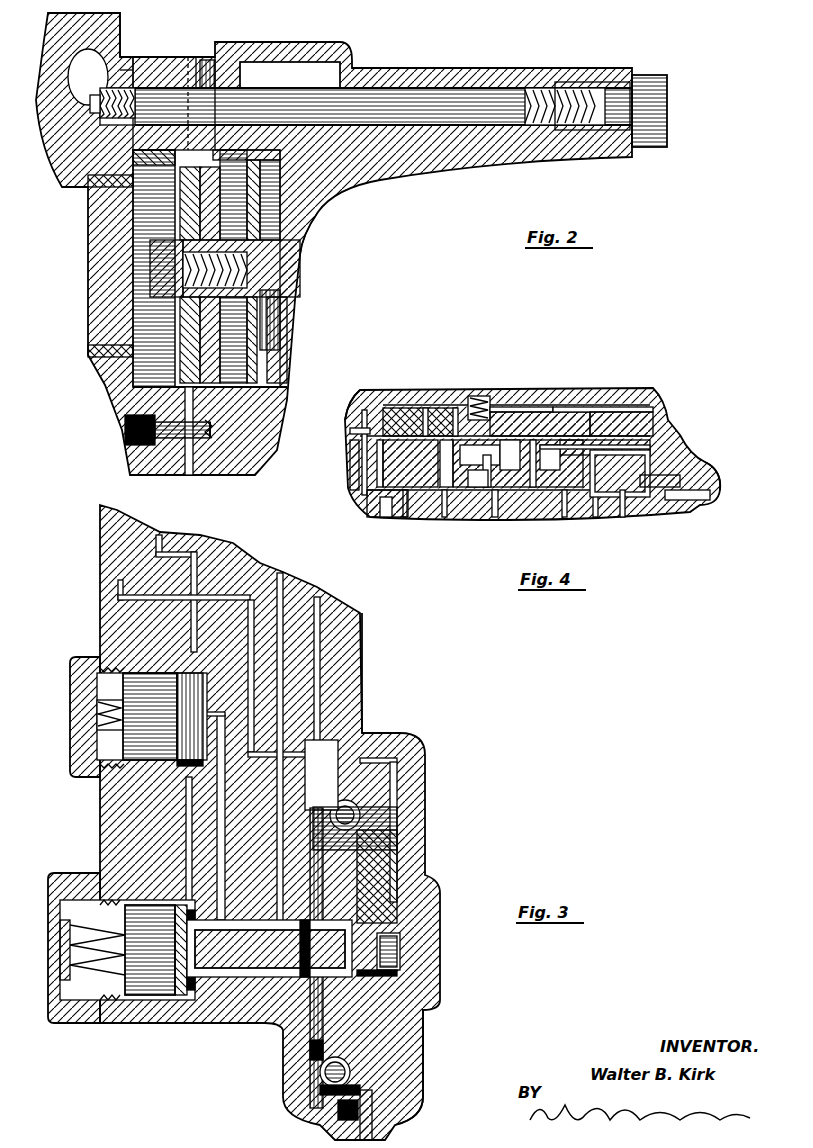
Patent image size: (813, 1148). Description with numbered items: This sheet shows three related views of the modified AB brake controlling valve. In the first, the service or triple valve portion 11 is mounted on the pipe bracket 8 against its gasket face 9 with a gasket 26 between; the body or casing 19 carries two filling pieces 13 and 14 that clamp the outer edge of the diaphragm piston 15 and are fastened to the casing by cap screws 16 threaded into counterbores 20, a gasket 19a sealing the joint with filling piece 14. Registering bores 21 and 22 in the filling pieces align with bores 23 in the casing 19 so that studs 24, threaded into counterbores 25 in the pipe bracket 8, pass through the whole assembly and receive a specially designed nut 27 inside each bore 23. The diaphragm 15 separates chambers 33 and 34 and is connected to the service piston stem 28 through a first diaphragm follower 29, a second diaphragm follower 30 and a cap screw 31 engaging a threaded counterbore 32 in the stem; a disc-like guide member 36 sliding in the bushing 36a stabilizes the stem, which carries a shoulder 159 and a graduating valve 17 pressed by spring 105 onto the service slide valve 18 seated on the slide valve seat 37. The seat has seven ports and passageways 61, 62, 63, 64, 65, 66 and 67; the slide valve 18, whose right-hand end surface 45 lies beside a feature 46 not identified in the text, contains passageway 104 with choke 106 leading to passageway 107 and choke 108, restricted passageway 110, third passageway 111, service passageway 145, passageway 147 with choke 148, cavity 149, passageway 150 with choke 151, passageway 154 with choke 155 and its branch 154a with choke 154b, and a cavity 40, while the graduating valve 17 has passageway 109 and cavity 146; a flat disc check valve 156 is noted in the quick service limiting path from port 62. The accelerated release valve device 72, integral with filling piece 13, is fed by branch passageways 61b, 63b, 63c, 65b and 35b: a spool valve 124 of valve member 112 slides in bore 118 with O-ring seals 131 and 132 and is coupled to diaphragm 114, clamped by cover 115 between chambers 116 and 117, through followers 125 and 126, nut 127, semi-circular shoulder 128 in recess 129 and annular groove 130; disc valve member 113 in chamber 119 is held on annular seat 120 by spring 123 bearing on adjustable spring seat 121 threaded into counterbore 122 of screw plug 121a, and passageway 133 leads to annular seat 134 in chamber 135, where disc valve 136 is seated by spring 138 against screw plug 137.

In FIG. 2, the pipe bracket 8 is at (62, 30).
In FIG. 2, the gasket face 9 is at (128, 68).
In FIG. 2, the service or triple valve device 11 is at (545, 68).
In FIG. 2, the filling piece 13 is at (145, 60).
In FIG. 3, the filling piece 13 is at (355, 630).
In FIG. 2, the filling piece 14 is at (205, 60).
In FIG. 2, the diaphragm type of piston 15 is at (150, 380).
In FIG. 2, the cap screw 16 is at (175, 448).
In FIG. 4, the graduating valve 17 is at (530, 425).
In FIG. 2, the service slide valve 18 is at (283, 285).
In FIG. 4, the service slide valve 18 is at (640, 400).
In FIG. 2, the body or casing 19 is at (345, 50).
In FIG. 4, the body or casing 19 is at (385, 505).
In FIG. 2, the gasket 19a is at (212, 455).
In FIG. 2, the tapped and threaded counterbore 20 is at (225, 440).
In FIG. 2, the registering bore 21 is at (160, 88).
In FIG. 2, the registering bore 22 is at (215, 88).
In FIG. 2, the bore 23 is at (490, 88).
In FIG. 2, the stud 24 is at (418, 88).
In FIG. 2, the screw-threaded counterbore 25 is at (92, 100).
In FIG. 2, the gasket 26 is at (125, 355).
In FIG. 2, the nut 27 is at (655, 75).
In FIG. 2, the valve operating or service piston stem 28 is at (300, 248).
In FIG. 4, the valve operating or service piston stem 28 is at (395, 420).
In FIG. 2, the first diaphragm follower 29 is at (225, 340).
In FIG. 2, the second diaphragm follower 30 is at (150, 222).
In FIG. 2, the cap screw 31 is at (155, 250).
In FIG. 2, the threaded counterbore 32 is at (185, 275).
In FIG. 2, the chamber 33 is at (130, 195).
In FIG. 2, the chamber 34 is at (150, 165).
In FIG. 2, the disc-like guide member 36 is at (262, 190).
In FIG. 2, the bushing 36a is at (275, 160).
In FIG. 4, the slide valve seat 37 is at (445, 460).
In FIG. 4, the cavity 40 is at (650, 470).
In FIG. 4, the right-hand end surface 45 is at (712, 470).
In FIG. 4, the slot 46 is at (712, 494).
In FIG. 4, the passageway and port 61 is at (386, 505).
In FIG. 4, the passageway and port 62 is at (444, 505).
In FIG. 4, the passageway and port 63 is at (495, 500).
In FIG. 4, the passageway and port 64 is at (596, 505).
In FIG. 4, the passageway and port 65 is at (580, 505).
In FIG. 4, the passageway and port 66 is at (645, 505).
In FIG. 4, the passageway and port 67 is at (635, 505).
In FIG. 4, the first passageway 104 is at (486, 470).
In FIG. 4, the spring 105 is at (488, 400).
In FIG. 4, the choke 106 is at (470, 440).
In FIG. 4, the second passageway 107 is at (458, 430).
In FIG. 4, the choke 108 is at (418, 498).
In FIG. 4, the first passageway 109 is at (455, 450).
In FIG. 4, the restricted passageway 110 is at (378, 455).
In FIG. 4, the third passageway 111 is at (580, 445).
In FIG. 4, the service passageway 145 is at (620, 447).
In FIG. 4, the cavity 146 is at (560, 408).
In FIG. 4, the passageway 147 is at (600, 440).
In FIG. 4, the choke 148 is at (553, 470).
In FIG. 4, the cavity 149 is at (548, 470).
In FIG. 4, the passageway 150 is at (500, 410).
In FIG. 4, the choke 151 is at (478, 480).
In FIG. 4, the passageway 154 is at (410, 470).
In FIG. 4, the branch passageway 154a is at (372, 435).
In FIG. 4, the choke 154b is at (410, 420).
In FIG. 4, the choke 155 is at (510, 470).
In FIG. 4, the flat disc check valve 156 is at (375, 413).
In FIG. 4, the shoulder 159 is at (380, 445).
In FIG. 3, the second branch passageway 61b is at (158, 542).
In FIG. 3, the second branch passageway 63b is at (120, 590).
In FIG. 3, the third branch passageway 63c is at (210, 672).
In FIG. 3, the second branch passageway 65b is at (282, 580).
In FIG. 3, the second branch passageway 35b is at (320, 600).
In FIG. 3, the valve device 72 is at (372, 684).
In FIG. 3, the valve member 112 is at (205, 978).
In FIG. 3, the valve member 113 is at (185, 998).
In FIG. 3, the diaphragm 114 is at (338, 1108).
In FIG. 3, the clamping cover 115 is at (410, 1085).
In FIG. 3, the chamber 116 is at (375, 1110).
In FIG. 3, the chamber 117 is at (320, 1090).
In FIG. 3, the bore 118 is at (245, 975).
In FIG. 3, the chamber 119 is at (140, 998).
In FIG. 3, the annular valve seat 120 is at (150, 998).
In FIG. 3, the adjustable spring seat 121 is at (85, 950).
In FIG. 3, the screw plug 121a is at (75, 1010).
In FIG. 3, the screw-threaded counterbore 122 is at (68, 925).
In FIG. 3, the spring 123 is at (105, 1003).
In FIG. 3, the spool valve 124 is at (300, 980).
In FIG. 3, the diaphragm follower 125 is at (322, 1075).
In FIG. 3, the diaphragm follower 126 is at (400, 1000).
In FIG. 3, the nut 127 is at (400, 948).
In FIG. 3, the semi-circular shoulder 128 is at (400, 966).
In FIG. 3, the recess 129 is at (370, 920).
In FIG. 3, the annular groove 130 is at (405, 898).
In FIG. 3, the O-ring seal 131 is at (312, 1050).
In FIG. 3, the O-ring seal 132 is at (305, 978).
In FIG. 3, the passageway 133 is at (220, 790).
In FIG. 3, the annular valve seat 134 is at (185, 765).
In FIG. 3, the chamber 135 is at (130, 735).
In FIG. 3, the disc valve member 136 is at (108, 670).
In FIG. 3, the screw plug 137 is at (80, 693).
In FIG. 3, the spring 138 is at (100, 713).